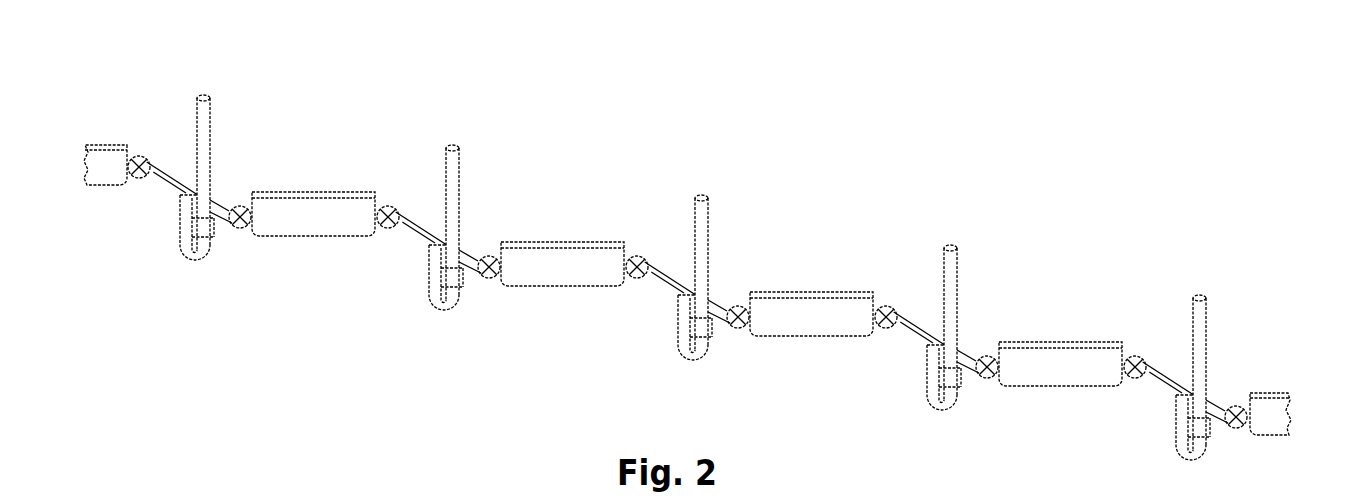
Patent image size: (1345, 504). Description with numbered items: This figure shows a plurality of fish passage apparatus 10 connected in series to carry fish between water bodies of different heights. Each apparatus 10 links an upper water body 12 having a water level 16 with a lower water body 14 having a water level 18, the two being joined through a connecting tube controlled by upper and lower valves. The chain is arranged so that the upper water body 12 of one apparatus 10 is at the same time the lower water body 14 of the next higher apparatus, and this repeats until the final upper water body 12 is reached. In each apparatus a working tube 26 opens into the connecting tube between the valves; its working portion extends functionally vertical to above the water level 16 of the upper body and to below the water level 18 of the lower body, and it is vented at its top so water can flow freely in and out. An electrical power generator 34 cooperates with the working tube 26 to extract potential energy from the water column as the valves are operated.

The fish passage apparatus 10 is at (164, 91).
The upper water body 12 is at (93, 152).
The lower water body 14 is at (1265, 410).
The water level of the upper water body 16 is at (110, 143).
The water level of the lower water body 18 is at (1288, 392).
The working tube 26 is at (211, 112).
The electrical power generator 34 is at (213, 224).